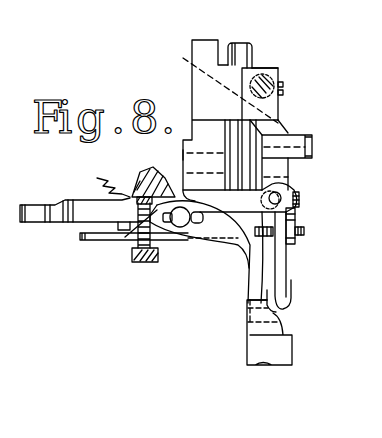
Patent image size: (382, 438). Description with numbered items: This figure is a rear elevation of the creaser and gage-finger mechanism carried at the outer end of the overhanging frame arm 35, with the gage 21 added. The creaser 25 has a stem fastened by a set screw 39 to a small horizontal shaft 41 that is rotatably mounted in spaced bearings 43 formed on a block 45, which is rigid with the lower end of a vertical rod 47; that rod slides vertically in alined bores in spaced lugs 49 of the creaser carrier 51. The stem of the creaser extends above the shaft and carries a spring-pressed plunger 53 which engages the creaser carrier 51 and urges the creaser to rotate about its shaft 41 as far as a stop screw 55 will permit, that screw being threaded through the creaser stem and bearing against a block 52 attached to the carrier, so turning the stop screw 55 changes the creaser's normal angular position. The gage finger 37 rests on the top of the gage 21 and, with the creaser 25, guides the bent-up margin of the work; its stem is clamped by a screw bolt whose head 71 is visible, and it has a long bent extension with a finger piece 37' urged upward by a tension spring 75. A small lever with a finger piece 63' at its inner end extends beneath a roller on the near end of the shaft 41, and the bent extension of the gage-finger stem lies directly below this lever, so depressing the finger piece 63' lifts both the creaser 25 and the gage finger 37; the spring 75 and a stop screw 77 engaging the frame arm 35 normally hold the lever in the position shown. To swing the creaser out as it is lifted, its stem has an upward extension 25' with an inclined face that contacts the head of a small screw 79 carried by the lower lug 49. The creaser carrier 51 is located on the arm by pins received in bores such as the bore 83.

The gage 21 is at (252, 327).
The creaser 25 is at (298, 262).
The upward extension 25' is at (241, 89).
The arm 35 is at (139, 172).
The gage finger 37 is at (231, 303).
The finger piece 37' is at (133, 241).
The set screw 39 is at (298, 197).
The horizontal shaft 41 is at (293, 208).
The bearings 43 is at (284, 188).
The block 45 is at (243, 150).
The vertical rod 47 is at (240, 52).
The lugs 49 is at (270, 72).
The creaser carrier 51 is at (203, 125).
The block 52 is at (253, 224).
The spring-pressed plunger 53 is at (264, 150).
The stop screw 55 is at (304, 232).
The finger piece 63' is at (81, 223).
The head 71 is at (182, 228).
The tension spring 75 is at (104, 184).
The stop screw 77 is at (139, 263).
The small screw 79 is at (283, 80).
The bore 83 is at (195, 154).